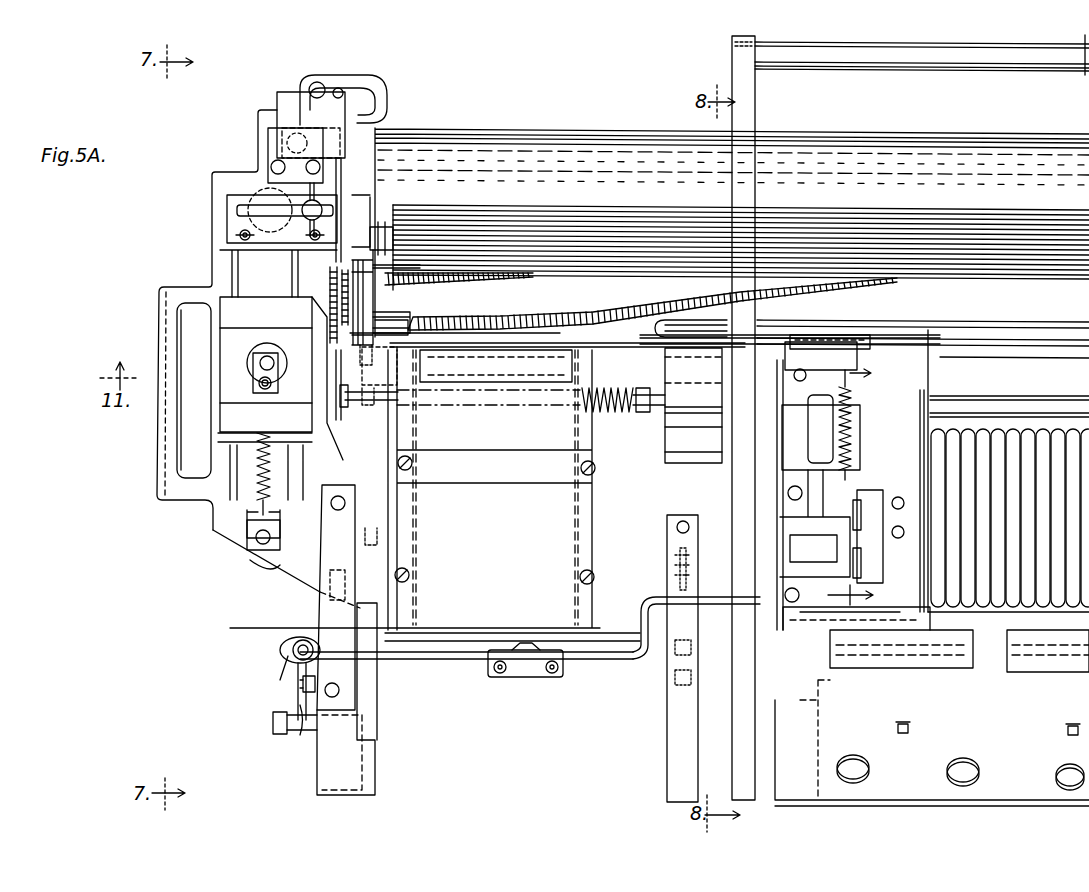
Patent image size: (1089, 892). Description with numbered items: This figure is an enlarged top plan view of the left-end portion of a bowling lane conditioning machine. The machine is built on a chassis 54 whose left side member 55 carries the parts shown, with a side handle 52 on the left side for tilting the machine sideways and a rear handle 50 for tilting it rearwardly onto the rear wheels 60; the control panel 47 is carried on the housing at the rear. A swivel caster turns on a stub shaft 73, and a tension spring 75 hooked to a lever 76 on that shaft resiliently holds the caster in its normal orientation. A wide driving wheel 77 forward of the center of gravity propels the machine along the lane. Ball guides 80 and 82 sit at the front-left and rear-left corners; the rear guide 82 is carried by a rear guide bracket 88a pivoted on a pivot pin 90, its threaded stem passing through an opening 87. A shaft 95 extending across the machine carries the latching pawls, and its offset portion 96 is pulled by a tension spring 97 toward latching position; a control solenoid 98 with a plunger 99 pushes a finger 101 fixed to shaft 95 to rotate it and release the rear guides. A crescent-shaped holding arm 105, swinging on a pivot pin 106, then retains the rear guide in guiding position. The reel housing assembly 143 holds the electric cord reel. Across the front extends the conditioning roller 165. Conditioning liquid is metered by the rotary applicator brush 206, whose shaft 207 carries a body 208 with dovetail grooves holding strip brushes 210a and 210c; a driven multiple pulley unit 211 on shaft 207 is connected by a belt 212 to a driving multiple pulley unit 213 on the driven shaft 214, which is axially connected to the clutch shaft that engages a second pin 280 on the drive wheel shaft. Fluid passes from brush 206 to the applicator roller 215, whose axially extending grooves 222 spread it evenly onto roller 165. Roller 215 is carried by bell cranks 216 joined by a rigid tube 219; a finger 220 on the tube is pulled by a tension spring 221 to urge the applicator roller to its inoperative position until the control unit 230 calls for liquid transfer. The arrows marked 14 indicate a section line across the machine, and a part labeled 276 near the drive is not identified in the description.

The section line arrows 14 is at (878, 486).
The control panel 47 is at (986, 734).
The rear handle 50 is at (755, 115).
The side handle 52 is at (172, 323).
The chassis 54 is at (295, 600).
The left side member 55 is at (273, 570).
The rear wheels 60 is at (828, 703).
The stub shaft 73 is at (267, 357).
The tension spring 75 is at (260, 480).
The lever 76 is at (258, 383).
The wheel 77 is at (690, 448).
The ball guide 80 is at (353, 80).
The ball guide 82 is at (265, 654).
The opening 87 is at (345, 100).
The rear guide bracket 88a is at (292, 664).
The pivot pin 90 is at (302, 682).
The shaft 95 is at (458, 660).
The offset portion 96 is at (660, 603).
The tension spring 97 is at (678, 565).
The control solenoid 98 is at (791, 552).
The plunger 99 is at (818, 436).
The finger 101 is at (822, 605).
The holding arm 105 is at (300, 738).
The pivot pin 106 is at (275, 722).
The reel housing assembly 143 is at (897, 482).
The conditioning roller 165 is at (485, 121).
The applicator brush 206 is at (969, 316).
The shaft 207 is at (348, 290).
The body 208 is at (1020, 300).
The strip brush 210a is at (598, 316).
The strip brush 210c is at (414, 287).
The driven multiple pulley unit 211 is at (330, 279).
The belt 212 is at (337, 335).
The driving multiple pulley unit 213 is at (345, 422).
The driven shaft 214 is at (370, 400).
The applicator roller 215 is at (613, 222).
The bell crank 216 is at (385, 225).
The rigid tube 219 is at (410, 350).
The finger 220 is at (835, 345).
The tension spring 221 is at (853, 440).
The grooves 222 is at (556, 218).
The control unit 230 is at (521, 437).
The compression spring 276 is at (621, 427).
The second pin 280 is at (652, 412).